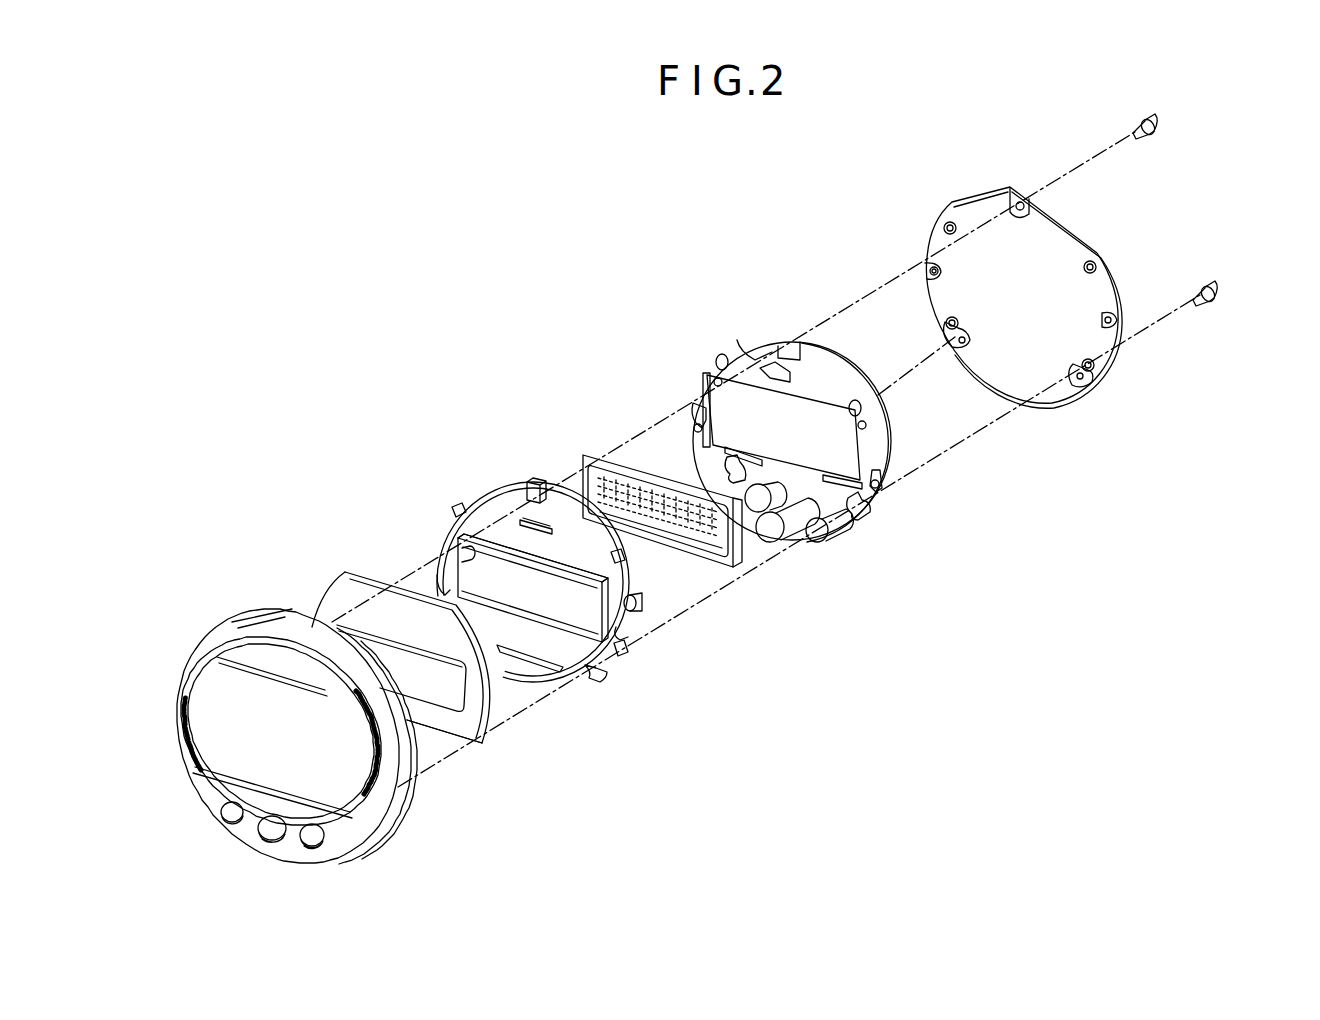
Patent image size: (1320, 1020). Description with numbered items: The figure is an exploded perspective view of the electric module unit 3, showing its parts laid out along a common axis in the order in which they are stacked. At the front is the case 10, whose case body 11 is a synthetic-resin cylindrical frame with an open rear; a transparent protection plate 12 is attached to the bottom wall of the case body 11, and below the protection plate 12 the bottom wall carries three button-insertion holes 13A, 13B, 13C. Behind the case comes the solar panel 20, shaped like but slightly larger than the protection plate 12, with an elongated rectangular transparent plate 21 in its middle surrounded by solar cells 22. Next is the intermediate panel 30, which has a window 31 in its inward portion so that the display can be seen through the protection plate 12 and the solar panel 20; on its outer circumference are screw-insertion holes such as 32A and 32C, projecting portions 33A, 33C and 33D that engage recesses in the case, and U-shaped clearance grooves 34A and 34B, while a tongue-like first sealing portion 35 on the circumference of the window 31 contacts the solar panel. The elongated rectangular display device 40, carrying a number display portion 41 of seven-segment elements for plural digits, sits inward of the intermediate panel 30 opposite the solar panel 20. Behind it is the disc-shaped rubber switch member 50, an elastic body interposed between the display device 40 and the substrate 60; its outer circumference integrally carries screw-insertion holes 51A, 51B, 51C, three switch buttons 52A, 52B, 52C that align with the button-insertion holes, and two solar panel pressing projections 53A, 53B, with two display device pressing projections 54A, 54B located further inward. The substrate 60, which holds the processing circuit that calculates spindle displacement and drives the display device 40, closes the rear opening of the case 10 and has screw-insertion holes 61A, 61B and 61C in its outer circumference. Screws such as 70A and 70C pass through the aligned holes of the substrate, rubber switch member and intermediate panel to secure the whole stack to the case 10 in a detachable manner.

The electric module unit 3 is at (518, 318).
The case 10 is at (148, 566).
The case body 11 is at (215, 646).
The protection plate 12 is at (200, 692).
The button-insertion hole 13A is at (224, 818).
The button-insertion hole 13B is at (263, 834).
The button-insertion hole 13C is at (304, 842).
The solar panel 20 is at (347, 590).
The transparent plate 21 is at (430, 690).
The solar cells 22 is at (455, 723).
The intermediate panel 30 is at (492, 500).
The window 31 is at (592, 598).
The screw-insertion hole 32A is at (537, 480).
The screw-insertion hole 32C is at (589, 678).
The projecting portion 33A is at (453, 509).
The projecting portion 33C is at (620, 558).
The projecting portion 33D is at (626, 650).
The clearance groove 34A is at (438, 580).
The clearance groove 34B is at (626, 634).
The first sealing portion 35 is at (562, 578).
The display device 40 is at (598, 452).
The number display portion 41 is at (700, 545).
The rubber switch member 50 is at (720, 356).
The screw-insertion hole 51A is at (790, 345).
The screw-insertion hole 51B is at (730, 472).
The screw-insertion hole 51C is at (865, 510).
The switch button 52A is at (752, 512).
The switch button 52B is at (795, 532).
The switch button 52C is at (832, 534).
The solar panel pressing projection 53A is at (695, 425).
The solar panel pressing projection 53B is at (882, 482).
The display device pressing projection 54A is at (722, 386).
The display device pressing projection 54B is at (858, 427).
The substrate 60 is at (973, 212).
The screw-insertion hole 61A is at (1018, 200).
The screw-insertion hole 61B is at (950, 335).
The screw-insertion hole 61C is at (1082, 382).
The screw 70A is at (1160, 128).
The screw 70C is at (1220, 294).